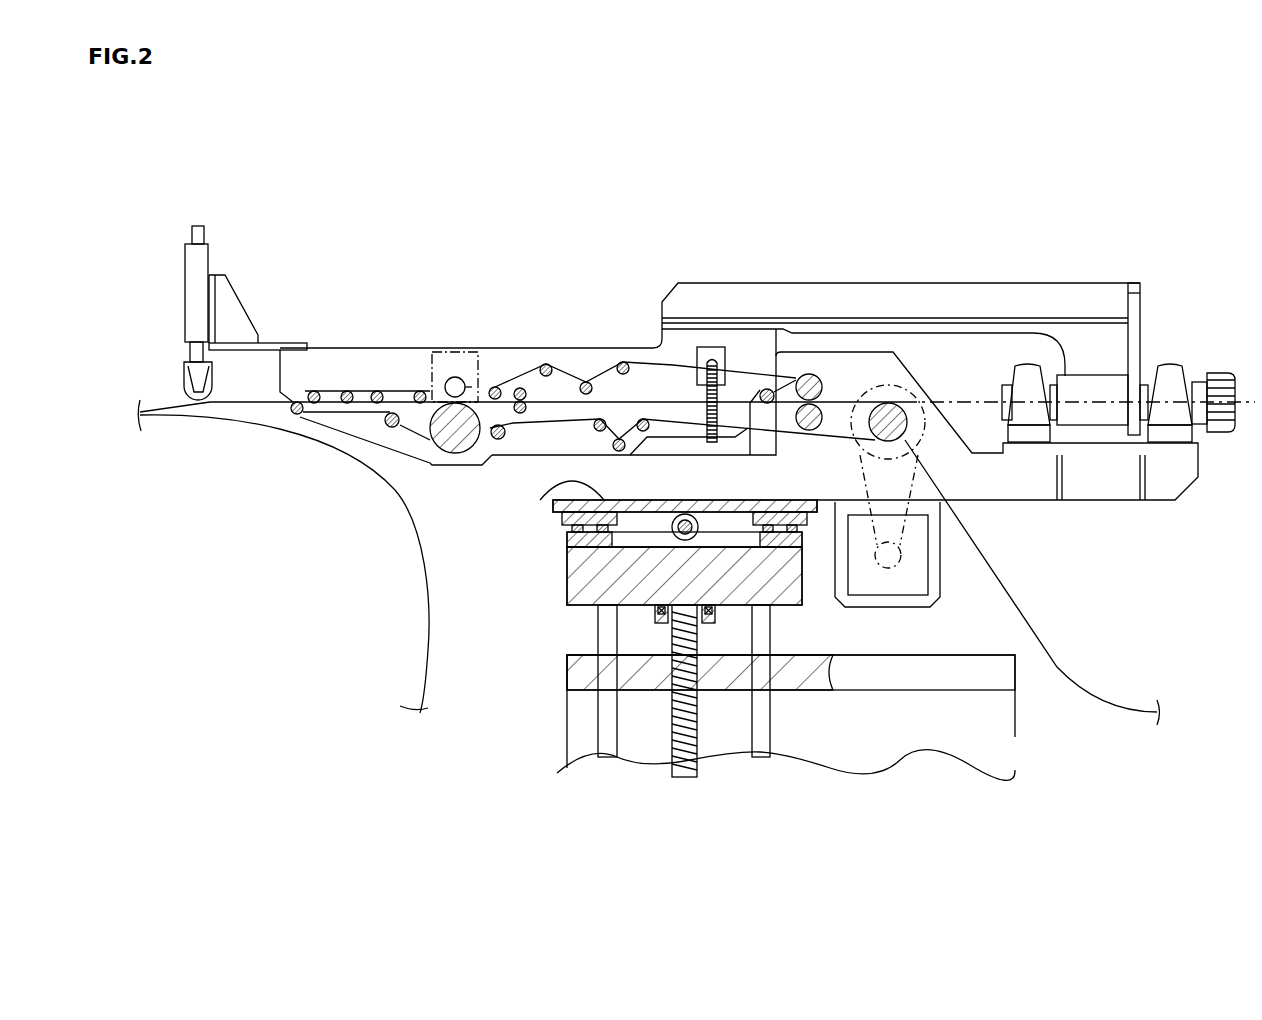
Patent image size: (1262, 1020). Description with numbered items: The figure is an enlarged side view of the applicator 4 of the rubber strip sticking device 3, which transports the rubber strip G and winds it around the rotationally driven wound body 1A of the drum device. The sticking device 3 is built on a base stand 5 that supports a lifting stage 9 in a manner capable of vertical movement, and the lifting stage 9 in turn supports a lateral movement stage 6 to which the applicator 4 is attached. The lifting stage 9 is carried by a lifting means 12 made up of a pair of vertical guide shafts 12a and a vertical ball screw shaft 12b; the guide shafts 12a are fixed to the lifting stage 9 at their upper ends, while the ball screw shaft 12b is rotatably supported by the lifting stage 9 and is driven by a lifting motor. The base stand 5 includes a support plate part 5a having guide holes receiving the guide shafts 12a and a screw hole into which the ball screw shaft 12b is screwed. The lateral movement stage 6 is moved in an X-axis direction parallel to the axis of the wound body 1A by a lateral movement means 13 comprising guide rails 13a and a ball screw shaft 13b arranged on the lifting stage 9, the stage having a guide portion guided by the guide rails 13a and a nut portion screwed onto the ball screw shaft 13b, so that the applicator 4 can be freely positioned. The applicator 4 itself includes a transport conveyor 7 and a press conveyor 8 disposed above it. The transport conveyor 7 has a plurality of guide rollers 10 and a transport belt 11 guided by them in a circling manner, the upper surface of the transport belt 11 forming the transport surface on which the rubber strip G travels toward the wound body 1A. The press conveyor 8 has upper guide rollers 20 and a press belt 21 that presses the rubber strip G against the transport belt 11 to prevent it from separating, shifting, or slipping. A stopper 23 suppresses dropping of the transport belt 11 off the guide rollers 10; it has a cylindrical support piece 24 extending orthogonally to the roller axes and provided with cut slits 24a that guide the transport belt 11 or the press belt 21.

The wound body 1A is at (428, 628).
The rubber strip sticking device 3 is at (1180, 270).
The applicator 4 is at (952, 268).
The base stand 5 is at (1015, 737).
The support plate part 5a is at (856, 690).
The lateral movement stage 6 is at (540, 500).
The transport conveyor 7 is at (538, 435).
The press conveyor 8 is at (572, 372).
The lifting stage 9 is at (787, 572).
The guide rollers 10 is at (497, 443).
The transport belt 11 is at (413, 433).
The lifting means 12 is at (580, 723).
The guide shafts 12a is at (617, 723).
The ball screw shaft 12b is at (672, 732).
The lateral movement means 13 is at (712, 527).
The guide rails 13a is at (607, 535).
The ball screw shaft 13b is at (685, 500).
The upper guide rollers 20 is at (546, 362).
The press belt 21 is at (517, 380).
The stopper 23 is at (697, 342).
The cylindrical support piece 24 is at (712, 358).
The cut slits 24a is at (762, 380).
The rubber strip G is at (155, 402).